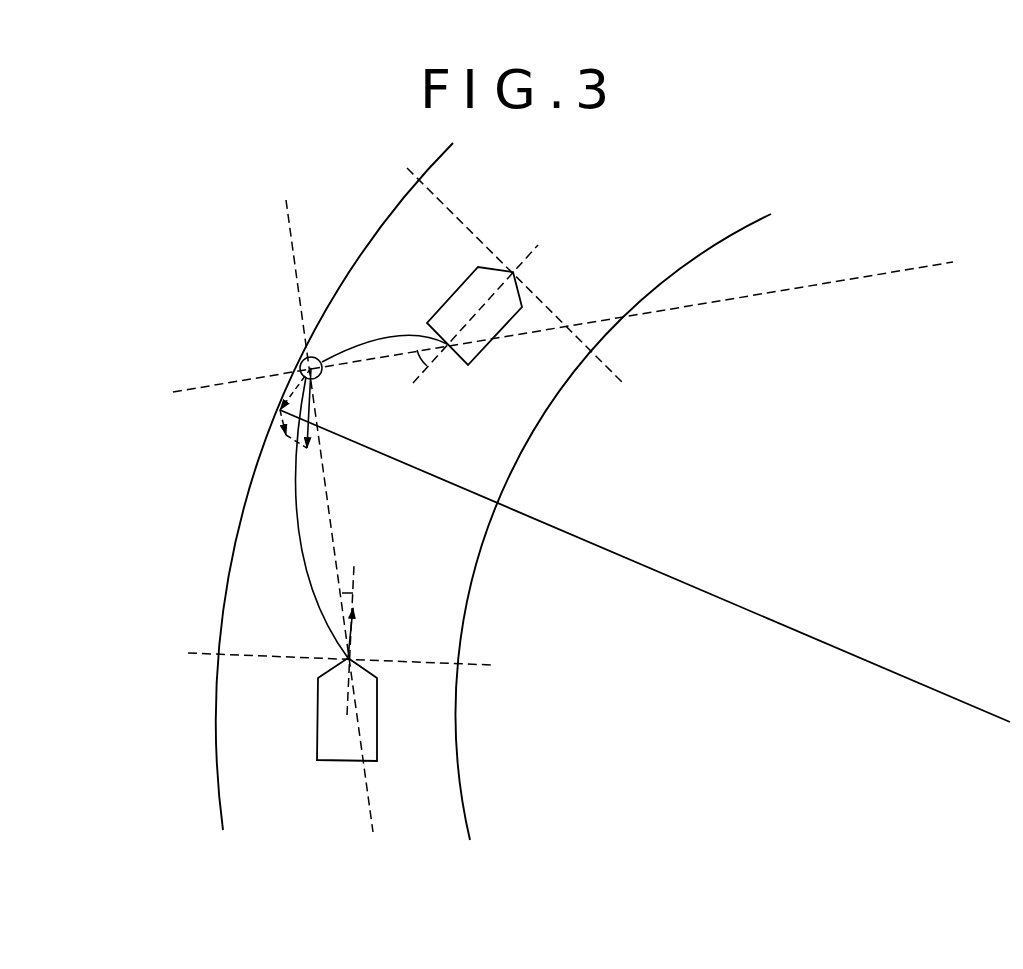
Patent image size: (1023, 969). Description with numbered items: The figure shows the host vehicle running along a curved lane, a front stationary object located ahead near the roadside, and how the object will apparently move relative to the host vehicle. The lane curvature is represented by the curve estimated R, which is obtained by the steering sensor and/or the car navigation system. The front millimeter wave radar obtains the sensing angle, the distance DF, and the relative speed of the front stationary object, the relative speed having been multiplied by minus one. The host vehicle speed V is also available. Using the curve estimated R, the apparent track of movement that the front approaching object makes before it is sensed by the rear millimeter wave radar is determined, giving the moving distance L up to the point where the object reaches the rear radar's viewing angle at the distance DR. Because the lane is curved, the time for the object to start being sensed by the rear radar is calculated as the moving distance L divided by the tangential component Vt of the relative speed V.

The apparent distance of movement L is at (233, 542).
The curve estimated R is at (645, 527).
The distance DR is at (373, 338).
The distance DF is at (298, 538).
The tangential component of the relative speed Vt is at (290, 387).
The vehicle speed (relative speed) V is at (385, 642).